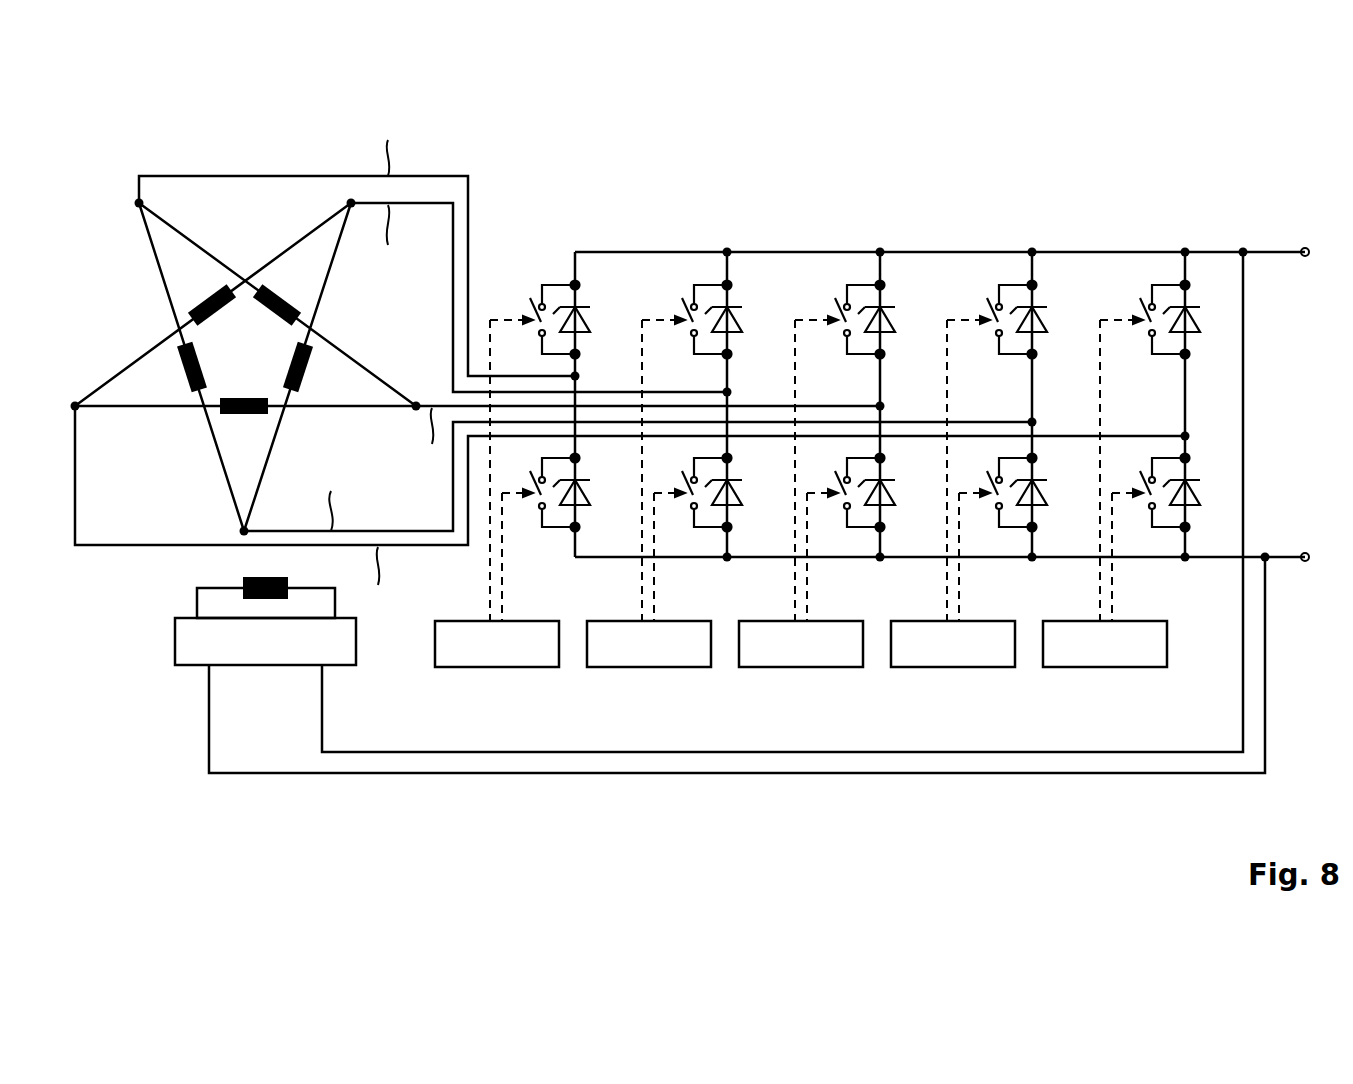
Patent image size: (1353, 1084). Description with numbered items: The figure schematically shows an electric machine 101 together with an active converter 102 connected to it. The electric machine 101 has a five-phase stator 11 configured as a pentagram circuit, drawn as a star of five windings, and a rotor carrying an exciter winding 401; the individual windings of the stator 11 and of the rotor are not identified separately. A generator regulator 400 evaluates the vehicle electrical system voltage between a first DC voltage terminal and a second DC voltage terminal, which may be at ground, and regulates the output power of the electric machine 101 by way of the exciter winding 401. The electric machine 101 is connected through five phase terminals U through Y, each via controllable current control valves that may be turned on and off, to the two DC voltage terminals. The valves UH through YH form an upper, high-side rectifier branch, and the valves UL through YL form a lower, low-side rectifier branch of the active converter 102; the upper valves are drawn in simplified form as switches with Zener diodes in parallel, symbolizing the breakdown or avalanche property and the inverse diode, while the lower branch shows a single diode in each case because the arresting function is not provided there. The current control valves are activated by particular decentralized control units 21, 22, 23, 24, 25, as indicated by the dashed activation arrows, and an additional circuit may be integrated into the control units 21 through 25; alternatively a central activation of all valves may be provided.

The five-phase stator 11 is at (255, 252).
The electric machine 101 is at (628, 362).
The active converter 102 is at (1150, 196).
The decentralized control unit 21 is at (495, 667).
The decentralized control unit 22 is at (647, 667).
The decentralized control unit 23 is at (799, 667).
The decentralized control unit 24 is at (951, 667).
The decentralized control unit 25 is at (1104, 667).
The generator regulator 400 is at (175, 643).
The exciter winding 401 is at (170, 579).